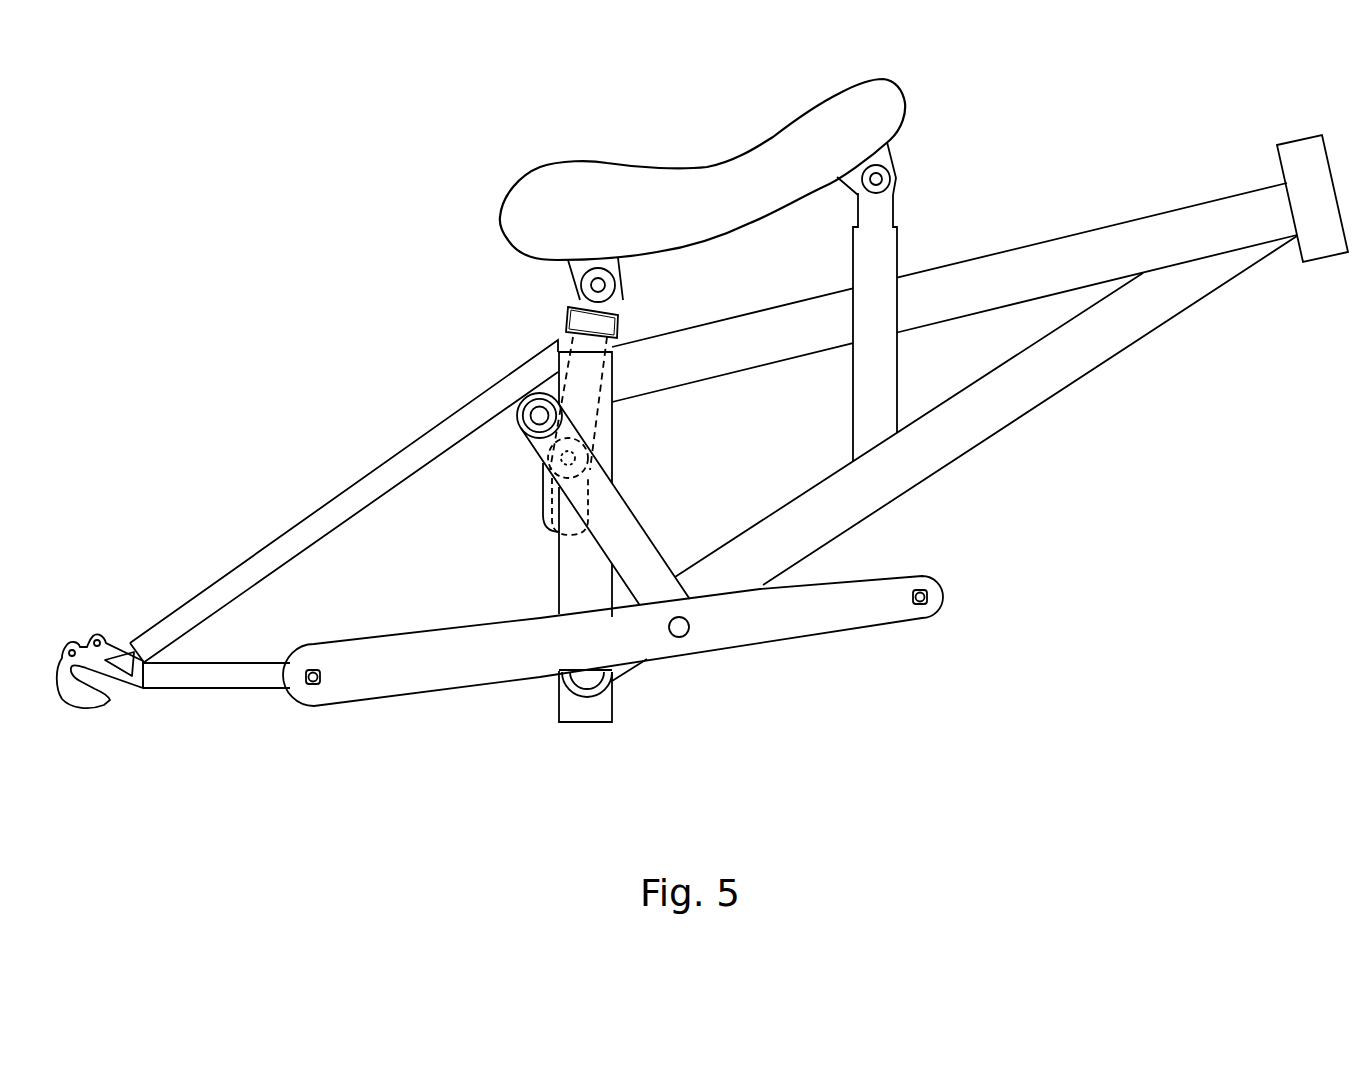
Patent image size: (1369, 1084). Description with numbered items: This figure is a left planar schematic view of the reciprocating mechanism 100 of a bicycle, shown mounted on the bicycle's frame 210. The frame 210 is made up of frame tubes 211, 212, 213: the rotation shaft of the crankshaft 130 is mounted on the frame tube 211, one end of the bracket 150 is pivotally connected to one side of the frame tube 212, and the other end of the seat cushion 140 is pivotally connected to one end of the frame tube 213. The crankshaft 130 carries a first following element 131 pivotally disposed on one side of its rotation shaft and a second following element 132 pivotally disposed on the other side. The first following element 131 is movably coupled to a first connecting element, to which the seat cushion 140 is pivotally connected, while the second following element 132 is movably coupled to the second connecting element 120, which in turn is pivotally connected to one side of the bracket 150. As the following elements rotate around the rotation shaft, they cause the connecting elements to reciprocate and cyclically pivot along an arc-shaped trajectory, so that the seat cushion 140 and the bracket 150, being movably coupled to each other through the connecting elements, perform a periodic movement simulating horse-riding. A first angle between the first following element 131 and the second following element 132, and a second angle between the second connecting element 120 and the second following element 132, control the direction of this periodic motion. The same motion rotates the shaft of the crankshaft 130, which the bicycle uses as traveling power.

The reciprocating mechanism 100 is at (348, 250).
The second connecting element 120 is at (627, 567).
The crankshaft 130 is at (500, 330).
The first following element 131 is at (543, 487).
The second following element 132 is at (533, 455).
The seat cushion 140 is at (627, 173).
The bracket 150 is at (828, 618).
The frame 210 is at (1075, 450).
The frame tube 211 is at (603, 445).
The frame tube 212 is at (220, 682).
The frame tube 213 is at (893, 247).